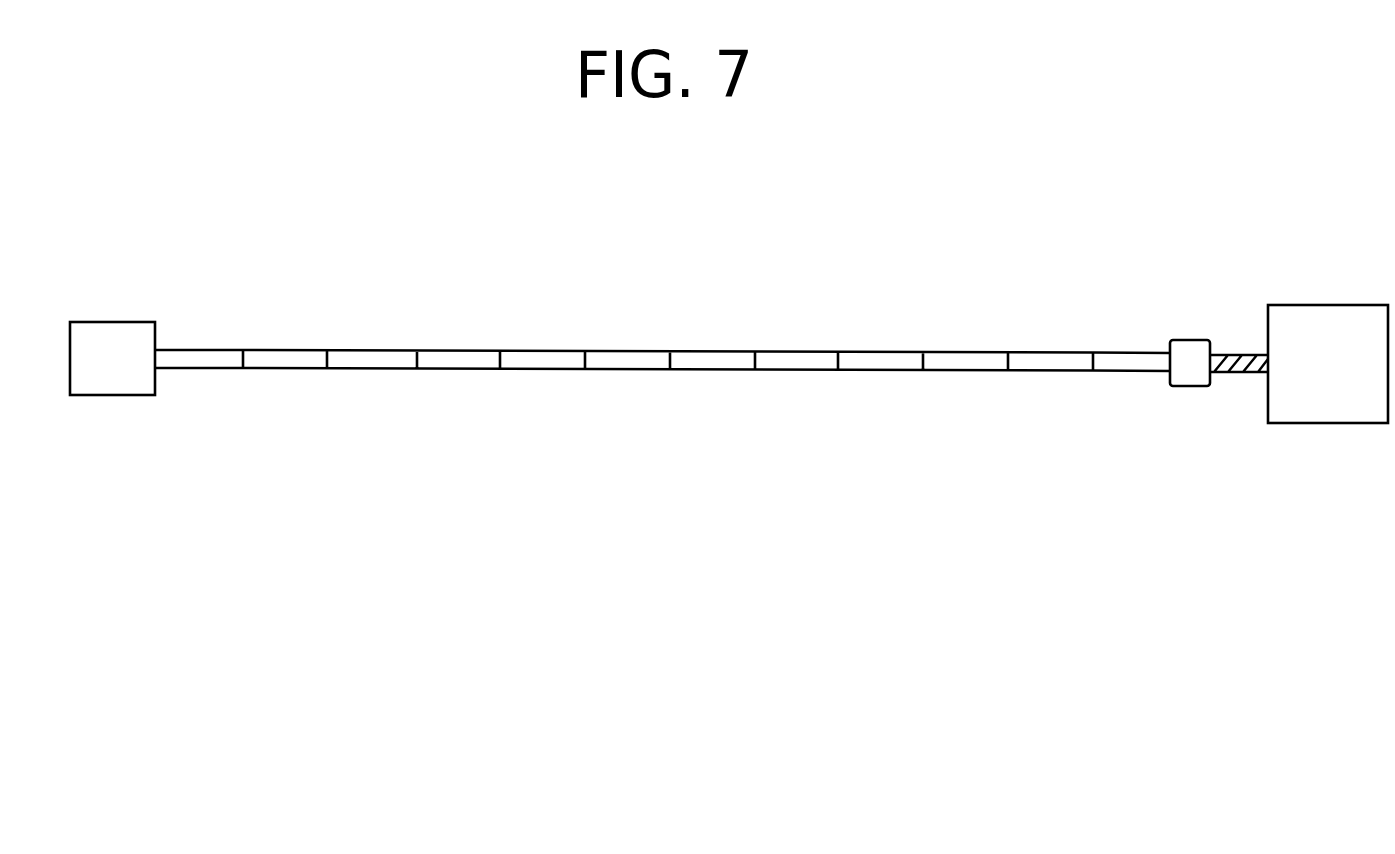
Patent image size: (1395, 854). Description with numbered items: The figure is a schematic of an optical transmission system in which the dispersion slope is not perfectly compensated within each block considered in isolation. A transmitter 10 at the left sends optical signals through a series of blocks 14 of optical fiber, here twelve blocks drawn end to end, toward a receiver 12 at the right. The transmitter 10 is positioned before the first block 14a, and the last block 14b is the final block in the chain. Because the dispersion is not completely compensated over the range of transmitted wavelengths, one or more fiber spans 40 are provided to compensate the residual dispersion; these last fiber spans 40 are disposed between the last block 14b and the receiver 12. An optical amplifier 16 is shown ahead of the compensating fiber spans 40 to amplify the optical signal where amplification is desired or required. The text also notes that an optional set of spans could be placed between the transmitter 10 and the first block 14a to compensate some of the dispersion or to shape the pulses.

The transmitter 10 is at (127, 395).
The receiver 12 is at (1318, 423).
The block 14 is at (288, 350).
The first block 14a is at (201, 350).
The last block 14b is at (1138, 353).
The optical amplifier 16 is at (1187, 387).
The fiber span 40 is at (1243, 355).